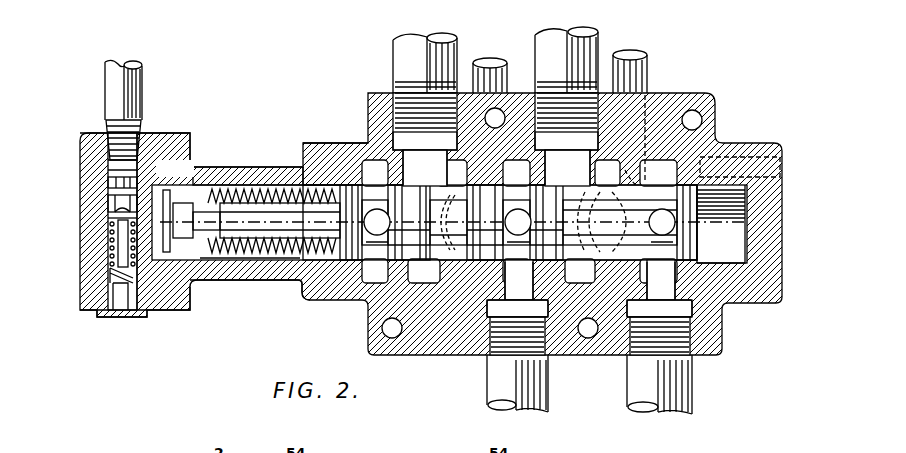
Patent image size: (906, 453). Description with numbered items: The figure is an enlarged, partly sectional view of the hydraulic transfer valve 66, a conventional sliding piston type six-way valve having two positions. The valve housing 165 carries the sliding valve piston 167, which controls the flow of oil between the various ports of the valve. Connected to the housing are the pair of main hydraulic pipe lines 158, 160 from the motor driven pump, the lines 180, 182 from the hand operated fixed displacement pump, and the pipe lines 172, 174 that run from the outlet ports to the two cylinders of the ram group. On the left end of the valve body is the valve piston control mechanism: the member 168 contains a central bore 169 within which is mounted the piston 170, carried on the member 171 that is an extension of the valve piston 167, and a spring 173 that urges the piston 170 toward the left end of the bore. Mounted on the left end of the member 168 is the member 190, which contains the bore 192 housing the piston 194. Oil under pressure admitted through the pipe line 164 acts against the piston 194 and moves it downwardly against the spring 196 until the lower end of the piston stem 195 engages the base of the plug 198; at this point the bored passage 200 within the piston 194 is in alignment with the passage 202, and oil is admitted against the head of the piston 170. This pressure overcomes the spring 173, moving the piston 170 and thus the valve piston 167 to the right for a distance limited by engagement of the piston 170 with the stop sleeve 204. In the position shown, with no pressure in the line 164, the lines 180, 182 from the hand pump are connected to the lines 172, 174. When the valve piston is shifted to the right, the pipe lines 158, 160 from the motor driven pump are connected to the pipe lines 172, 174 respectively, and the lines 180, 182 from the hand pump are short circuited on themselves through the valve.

The hydraulic transfer valve 66 is at (309, 72).
The main hydraulic pipe line 158 is at (495, 382).
The main hydraulic pipe line 160 is at (637, 385).
The pipe line 164 is at (106, 76).
The valve housing 165 is at (660, 97).
The sliding valve piston 167 is at (360, 140).
The member 168 is at (240, 170).
The central bore 169 is at (215, 185).
The piston 170 is at (190, 282).
The member 171 is at (255, 212).
The pipe line 172 is at (645, 72).
The spring 173 is at (230, 280).
The pipe line 174 is at (478, 68).
The line 180 is at (540, 45).
The line 182 is at (398, 56).
The member 190 is at (108, 183).
The bore 192 is at (108, 225).
The piston 194 is at (108, 178).
The piston stem 195 is at (108, 250).
The spring 196 is at (108, 273).
The plug 198 is at (122, 318).
The bored passage 200 is at (110, 203).
The passage 202 is at (137, 221).
The stop sleeve 204 is at (285, 276).